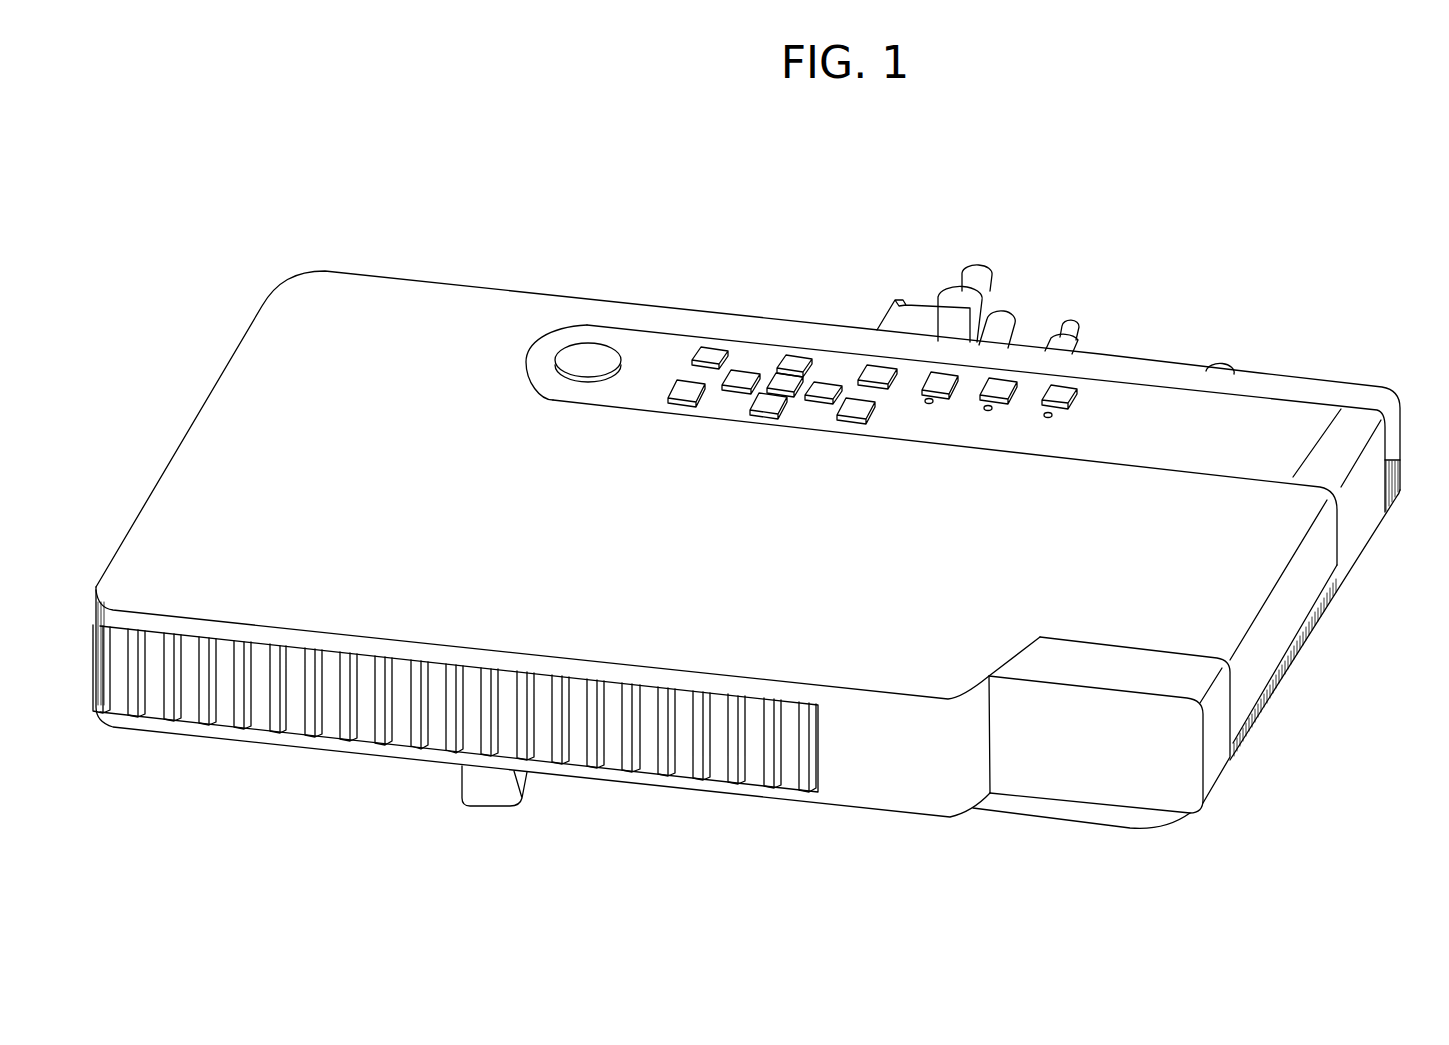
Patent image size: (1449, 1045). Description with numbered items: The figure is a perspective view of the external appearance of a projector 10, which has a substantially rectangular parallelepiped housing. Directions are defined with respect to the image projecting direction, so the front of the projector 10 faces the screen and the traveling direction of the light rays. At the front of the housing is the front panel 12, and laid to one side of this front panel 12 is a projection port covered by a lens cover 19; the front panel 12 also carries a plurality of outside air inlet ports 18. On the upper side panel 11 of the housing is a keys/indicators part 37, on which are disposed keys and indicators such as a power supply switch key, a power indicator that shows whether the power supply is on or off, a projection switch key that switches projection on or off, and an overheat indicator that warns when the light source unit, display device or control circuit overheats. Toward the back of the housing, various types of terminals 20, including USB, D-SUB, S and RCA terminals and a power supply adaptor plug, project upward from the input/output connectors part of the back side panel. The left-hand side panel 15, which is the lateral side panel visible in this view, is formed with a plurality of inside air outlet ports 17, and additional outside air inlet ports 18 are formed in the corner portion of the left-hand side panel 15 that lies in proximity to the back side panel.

The projector 10 is at (694, 216).
The upper side panel 11 is at (487, 297).
The front panel 12 is at (870, 786).
The left-hand side panel 15 is at (1287, 606).
The inside air outlet ports 17 is at (1270, 690).
The outside air inlet ports 18 is at (740, 781).
The lens cover 19 is at (1107, 778).
The terminals 20 is at (1022, 266).
The keys/indicators part 37 is at (796, 303).